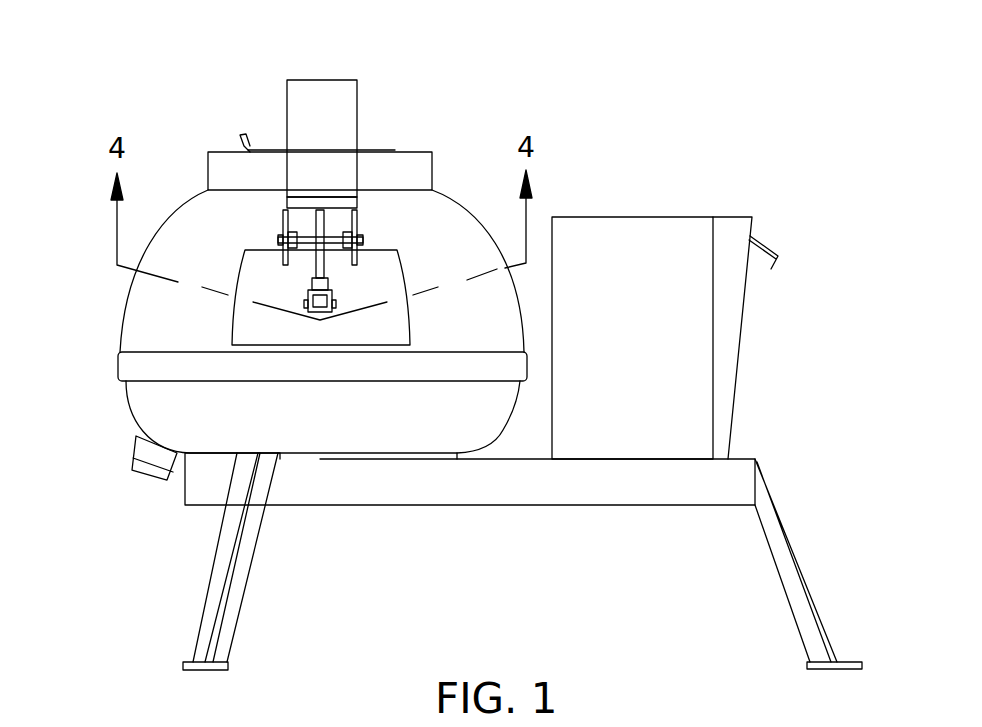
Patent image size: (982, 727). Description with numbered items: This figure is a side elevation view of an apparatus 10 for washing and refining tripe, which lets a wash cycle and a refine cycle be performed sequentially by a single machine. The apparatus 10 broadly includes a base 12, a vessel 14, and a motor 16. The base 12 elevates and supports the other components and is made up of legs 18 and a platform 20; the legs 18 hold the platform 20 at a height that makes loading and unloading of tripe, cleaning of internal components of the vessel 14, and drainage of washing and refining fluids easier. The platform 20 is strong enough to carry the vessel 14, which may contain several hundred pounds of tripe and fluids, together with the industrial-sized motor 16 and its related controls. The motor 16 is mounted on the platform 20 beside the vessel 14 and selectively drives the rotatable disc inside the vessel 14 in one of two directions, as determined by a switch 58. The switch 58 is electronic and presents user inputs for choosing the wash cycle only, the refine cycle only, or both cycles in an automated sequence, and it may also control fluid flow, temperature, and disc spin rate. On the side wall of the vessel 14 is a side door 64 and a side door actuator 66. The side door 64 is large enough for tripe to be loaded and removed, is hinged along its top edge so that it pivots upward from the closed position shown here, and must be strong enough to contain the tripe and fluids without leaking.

The apparatus 10 is at (205, 79).
The base 12 is at (150, 549).
The vessel 14 is at (98, 288).
The motor 16 is at (667, 227).
The legs 18 is at (253, 563).
The platform 20 is at (602, 485).
The switch 58 is at (778, 253).
The side door 64 is at (387, 278).
The side door actuator 66 is at (345, 102).